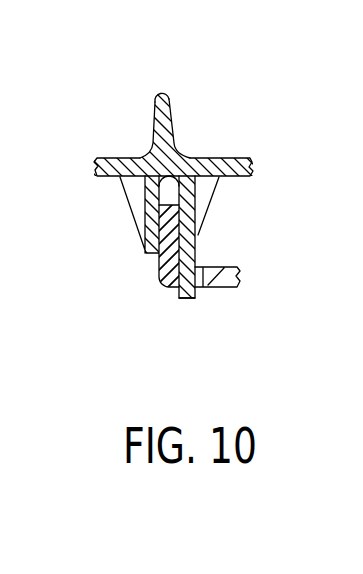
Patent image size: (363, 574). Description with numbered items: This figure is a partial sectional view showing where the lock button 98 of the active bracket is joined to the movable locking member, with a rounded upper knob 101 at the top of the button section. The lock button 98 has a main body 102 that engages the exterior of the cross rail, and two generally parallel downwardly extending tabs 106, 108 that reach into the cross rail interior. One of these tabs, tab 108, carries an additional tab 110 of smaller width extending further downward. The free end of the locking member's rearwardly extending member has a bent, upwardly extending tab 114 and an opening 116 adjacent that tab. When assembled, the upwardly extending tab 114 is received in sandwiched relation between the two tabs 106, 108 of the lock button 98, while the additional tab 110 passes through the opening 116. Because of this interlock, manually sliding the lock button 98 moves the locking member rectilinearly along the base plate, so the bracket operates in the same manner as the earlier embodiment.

The lock button 98 is at (170, 153).
The rounded knob 101 is at (168, 97).
The main body 102 is at (228, 158).
The downwardly extending tab 106 is at (150, 230).
The downwardly extending tab 108 is at (187, 233).
The additional tab 110 is at (192, 299).
The upwardly extending tab 114 is at (168, 265).
The opening 116 is at (200, 266).